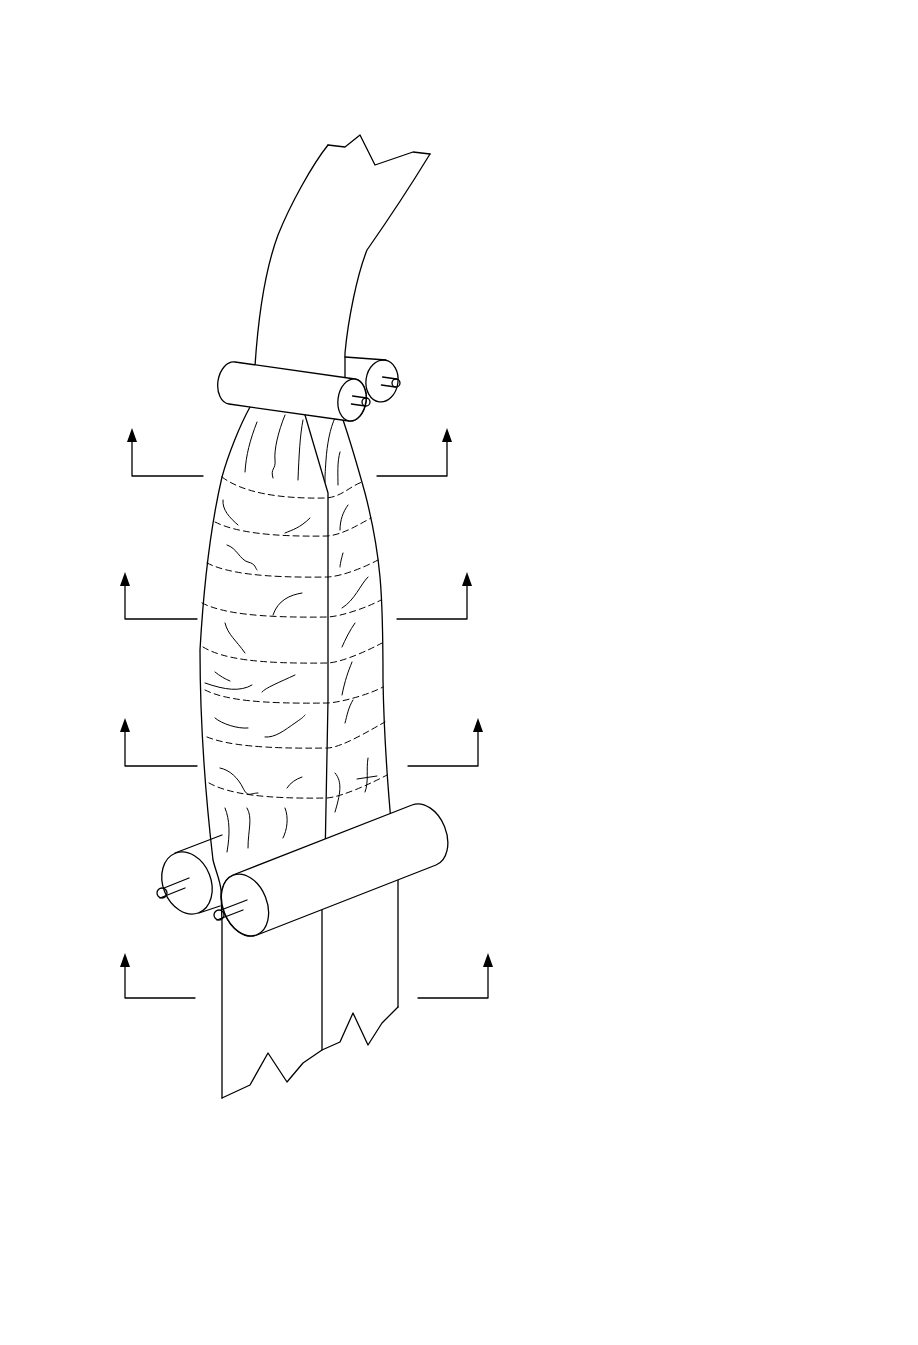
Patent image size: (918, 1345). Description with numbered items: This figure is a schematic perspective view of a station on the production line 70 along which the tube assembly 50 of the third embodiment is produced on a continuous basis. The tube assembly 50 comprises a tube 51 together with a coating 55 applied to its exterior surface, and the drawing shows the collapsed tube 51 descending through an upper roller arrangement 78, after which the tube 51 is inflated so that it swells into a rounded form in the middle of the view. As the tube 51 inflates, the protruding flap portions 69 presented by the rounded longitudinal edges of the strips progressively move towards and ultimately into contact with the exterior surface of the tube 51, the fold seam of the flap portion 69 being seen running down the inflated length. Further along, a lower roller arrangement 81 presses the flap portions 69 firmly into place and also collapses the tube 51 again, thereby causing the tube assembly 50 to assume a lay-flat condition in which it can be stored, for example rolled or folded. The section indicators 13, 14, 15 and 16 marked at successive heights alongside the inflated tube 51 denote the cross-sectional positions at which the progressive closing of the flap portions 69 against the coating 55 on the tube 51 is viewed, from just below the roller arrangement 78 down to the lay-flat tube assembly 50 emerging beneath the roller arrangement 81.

The tube assembly 50 is at (398, 1008).
The tube 51 is at (498, 47).
The coating 55 is at (375, 233).
The protruding flap portion 69 is at (333, 549).
The production line 70 is at (203, 289).
The roller arrangement 78 is at (385, 367).
The roller arrangement 81 is at (412, 843).
The section line 13- 13 is at (290, 438).
The section line 14- 14 is at (296, 582).
The section line 15- 15 is at (302, 728).
The section line 16- 16 is at (306, 960).